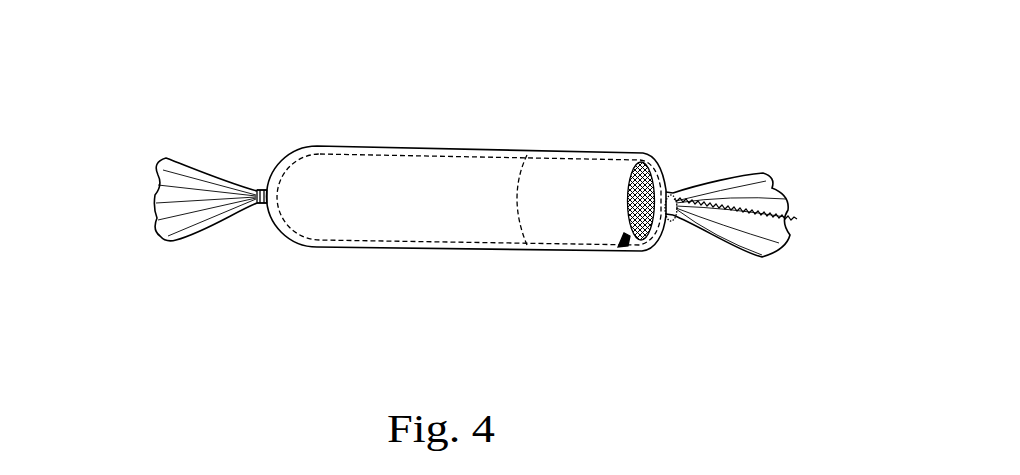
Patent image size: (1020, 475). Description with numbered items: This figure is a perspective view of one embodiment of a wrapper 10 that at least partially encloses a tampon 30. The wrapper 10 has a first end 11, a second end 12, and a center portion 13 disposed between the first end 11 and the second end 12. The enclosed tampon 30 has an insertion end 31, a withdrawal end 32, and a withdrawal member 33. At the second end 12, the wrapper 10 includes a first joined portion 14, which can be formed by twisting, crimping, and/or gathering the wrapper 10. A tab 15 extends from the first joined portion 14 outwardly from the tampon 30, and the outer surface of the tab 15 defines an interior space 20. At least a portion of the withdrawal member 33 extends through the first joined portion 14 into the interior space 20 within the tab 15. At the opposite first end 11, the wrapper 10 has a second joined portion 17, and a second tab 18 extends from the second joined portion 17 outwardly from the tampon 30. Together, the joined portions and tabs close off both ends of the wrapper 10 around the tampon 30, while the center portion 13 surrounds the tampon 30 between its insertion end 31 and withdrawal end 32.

The wrapper 10 is at (224, 119).
The first end 11 is at (250, 180).
The second end 12 is at (677, 146).
The center portion 13 is at (460, 146).
The first joined portion 14 is at (671, 226).
The tab 15 is at (792, 238).
The second joined portion 17 is at (255, 208).
The second tab 18 is at (152, 211).
The interior space 20 is at (764, 191).
The tampon 30 is at (393, 178).
The insertion end 31 is at (315, 193).
The withdrawal end 32 is at (596, 200).
The withdrawal member 33 is at (622, 246).